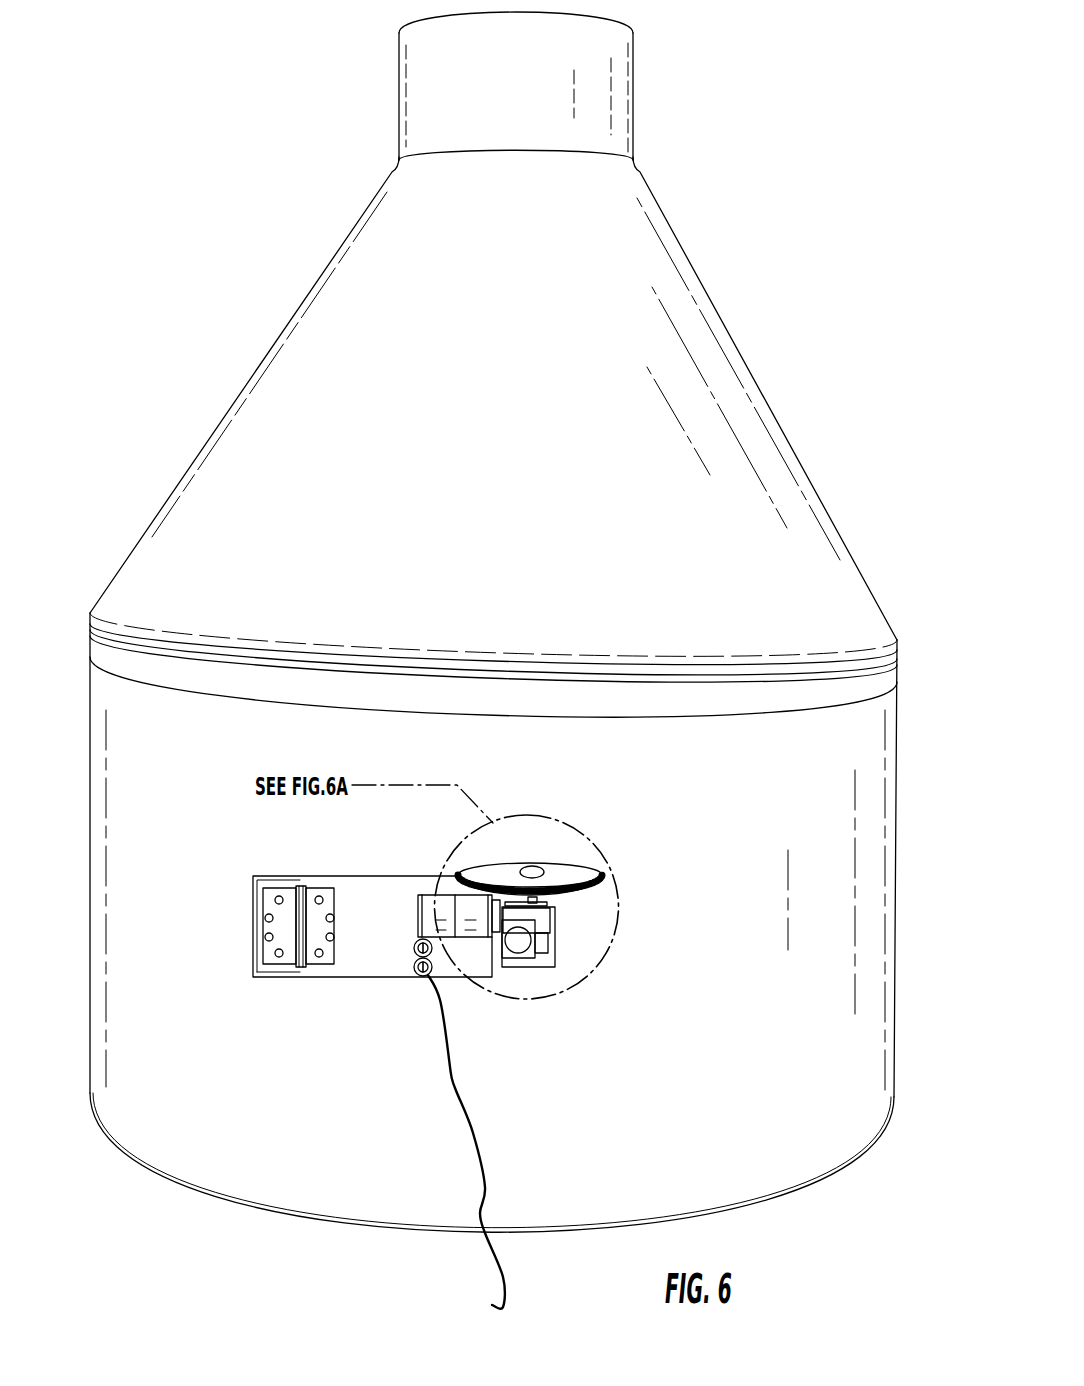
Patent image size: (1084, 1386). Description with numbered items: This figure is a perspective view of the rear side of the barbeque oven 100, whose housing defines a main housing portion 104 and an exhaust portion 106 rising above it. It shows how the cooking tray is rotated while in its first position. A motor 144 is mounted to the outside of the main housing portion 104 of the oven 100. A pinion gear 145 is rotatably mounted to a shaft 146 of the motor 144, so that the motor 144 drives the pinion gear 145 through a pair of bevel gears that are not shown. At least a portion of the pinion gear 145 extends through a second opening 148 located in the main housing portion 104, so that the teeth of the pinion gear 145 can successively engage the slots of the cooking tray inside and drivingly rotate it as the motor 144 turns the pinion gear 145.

The barbeque oven 100 is at (509, 622).
The main housing portion 104 is at (810, 810).
The exhaust portion 106 is at (650, 320).
The motor 144 is at (475, 927).
The pinion gear 145 is at (562, 873).
The shaft 146 is at (533, 903).
The second opening 148 is at (460, 877).